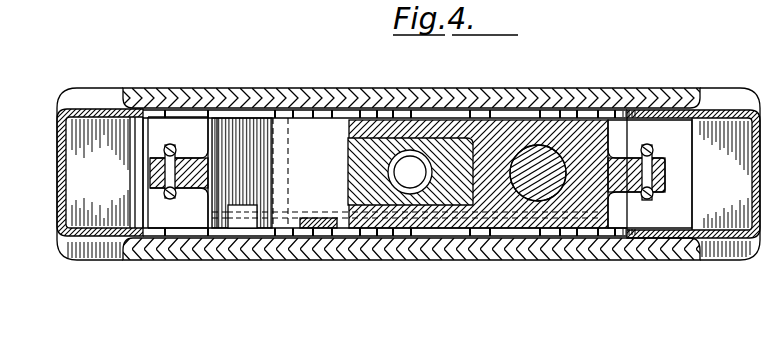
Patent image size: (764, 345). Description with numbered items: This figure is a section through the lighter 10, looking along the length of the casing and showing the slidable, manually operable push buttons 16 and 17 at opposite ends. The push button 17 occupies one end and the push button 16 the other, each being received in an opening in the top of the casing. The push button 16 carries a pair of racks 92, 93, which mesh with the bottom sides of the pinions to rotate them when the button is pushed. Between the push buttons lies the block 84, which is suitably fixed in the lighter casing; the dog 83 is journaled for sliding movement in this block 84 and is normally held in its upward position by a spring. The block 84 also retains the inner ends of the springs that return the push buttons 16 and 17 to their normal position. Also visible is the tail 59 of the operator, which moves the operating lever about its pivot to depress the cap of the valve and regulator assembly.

The lighter 10 is at (428, 66).
The push button 16 is at (720, 112).
The push button 17 is at (90, 112).
The tail 59 is at (322, 231).
The dog 83 is at (244, 222).
The block 84 is at (152, 177).
The rack 92 is at (385, 232).
The rack 93 is at (457, 113).